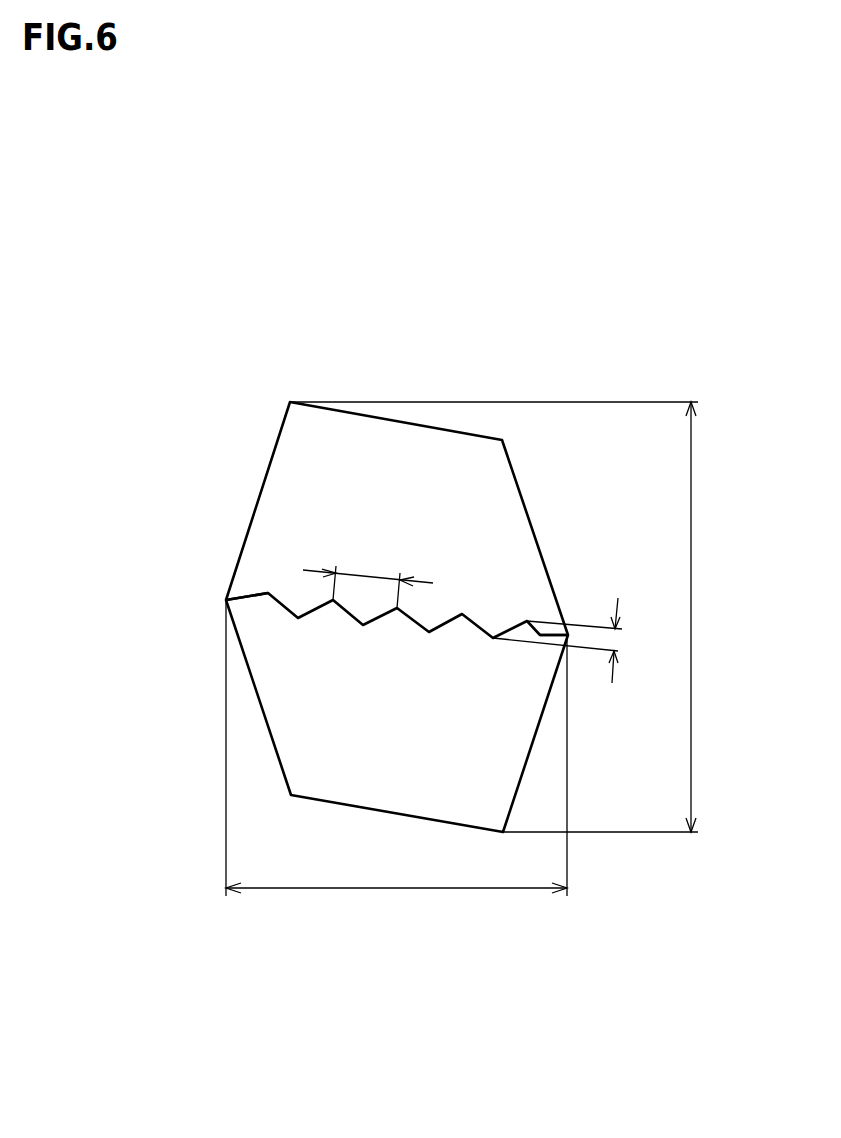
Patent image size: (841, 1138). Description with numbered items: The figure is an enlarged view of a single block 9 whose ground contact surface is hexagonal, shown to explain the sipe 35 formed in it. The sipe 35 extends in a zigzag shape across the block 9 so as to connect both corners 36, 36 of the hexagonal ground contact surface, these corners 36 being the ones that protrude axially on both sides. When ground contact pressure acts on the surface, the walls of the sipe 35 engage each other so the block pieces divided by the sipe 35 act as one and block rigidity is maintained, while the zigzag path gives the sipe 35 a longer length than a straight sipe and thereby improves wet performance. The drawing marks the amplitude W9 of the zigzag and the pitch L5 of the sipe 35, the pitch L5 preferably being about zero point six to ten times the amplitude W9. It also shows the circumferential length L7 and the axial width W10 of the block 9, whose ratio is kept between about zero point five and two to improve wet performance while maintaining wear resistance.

The block 9 is at (326, 479).
The sipe 35 is at (448, 613).
The corner 36 is at (226, 600).
The pitch of the sipe L5 is at (368, 579).
The amplitude of the sipe W9 is at (583, 640).
The circumferential length of the block L7 is at (513, 617).
The axial width of the block W10 is at (396, 761).